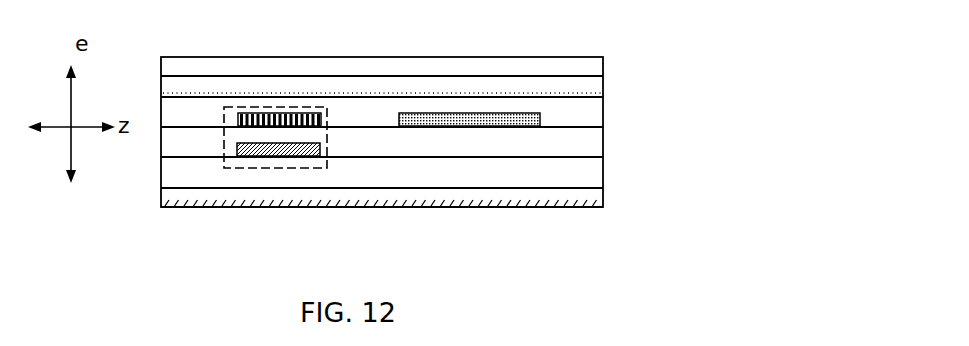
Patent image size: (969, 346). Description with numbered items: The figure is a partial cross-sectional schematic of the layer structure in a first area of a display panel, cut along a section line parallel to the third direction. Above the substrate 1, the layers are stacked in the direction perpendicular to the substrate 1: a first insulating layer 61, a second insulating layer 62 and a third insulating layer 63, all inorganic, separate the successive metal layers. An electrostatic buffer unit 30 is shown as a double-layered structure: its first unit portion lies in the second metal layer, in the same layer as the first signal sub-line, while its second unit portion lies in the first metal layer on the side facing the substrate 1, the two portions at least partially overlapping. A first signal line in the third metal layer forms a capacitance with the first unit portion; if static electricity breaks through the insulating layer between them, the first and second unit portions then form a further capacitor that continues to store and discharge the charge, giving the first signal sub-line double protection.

The substrate 1 is at (567, 205).
The first insulating layer 61 is at (567, 168).
The second insulating layer 62 is at (567, 139).
The third insulating layer 63 is at (567, 112).
The electrostatic buffer unit 30 is at (226, 157).